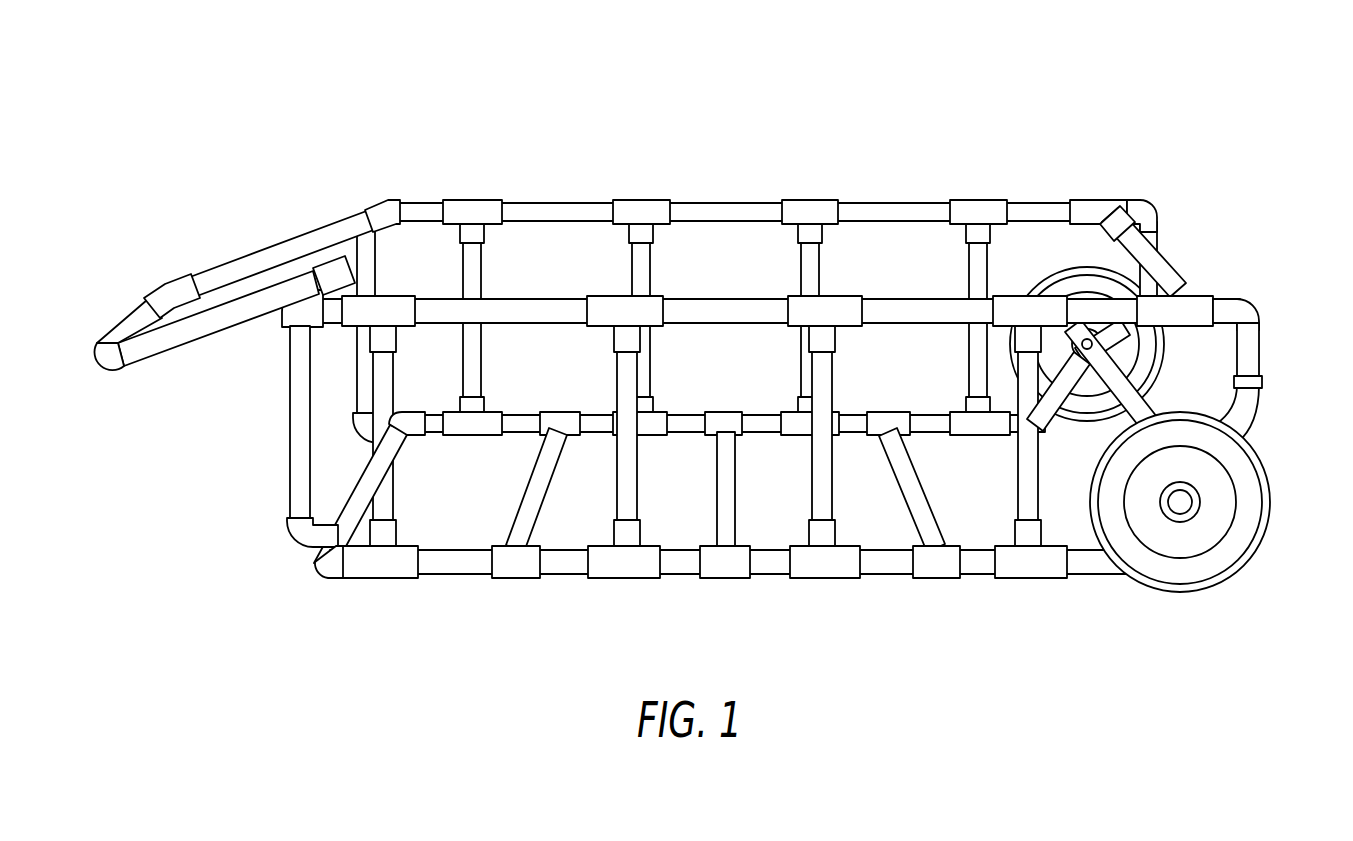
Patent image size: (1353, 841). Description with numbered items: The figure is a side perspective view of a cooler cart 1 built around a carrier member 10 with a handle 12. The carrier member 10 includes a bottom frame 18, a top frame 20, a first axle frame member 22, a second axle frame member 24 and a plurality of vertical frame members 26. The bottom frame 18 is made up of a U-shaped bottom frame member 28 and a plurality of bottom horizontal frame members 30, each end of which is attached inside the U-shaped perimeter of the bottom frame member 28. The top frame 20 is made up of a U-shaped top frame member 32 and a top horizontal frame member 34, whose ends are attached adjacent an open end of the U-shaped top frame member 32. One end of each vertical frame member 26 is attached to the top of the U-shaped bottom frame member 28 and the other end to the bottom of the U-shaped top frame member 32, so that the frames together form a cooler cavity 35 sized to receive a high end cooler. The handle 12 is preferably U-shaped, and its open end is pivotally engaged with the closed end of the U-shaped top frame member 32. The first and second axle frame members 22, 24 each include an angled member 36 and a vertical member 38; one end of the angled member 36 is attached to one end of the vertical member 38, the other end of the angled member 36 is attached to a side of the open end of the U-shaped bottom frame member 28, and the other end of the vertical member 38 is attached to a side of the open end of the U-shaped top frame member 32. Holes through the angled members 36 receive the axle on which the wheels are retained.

The cooler cart 1 is at (699, 332).
The carrier member 10 is at (699, 372).
The handle 12 is at (213, 278).
The bottom frame 18 is at (452, 567).
The top frame 20 is at (810, 172).
The first axle frame member 22 is at (1258, 324).
The second axle frame member 24 is at (1157, 219).
The vertical frame members 26 is at (474, 264).
The U-shaped bottom frame member 28 is at (682, 567).
The bottom horizontal frame members 30 is at (537, 488).
The U-shaped top frame member 32 is at (885, 203).
The top horizontal frame member 34 is at (1167, 280).
The cooler cavity 35 is at (407, 252).
The angled member 36 is at (1150, 363).
The vertical member 38 is at (1155, 242).